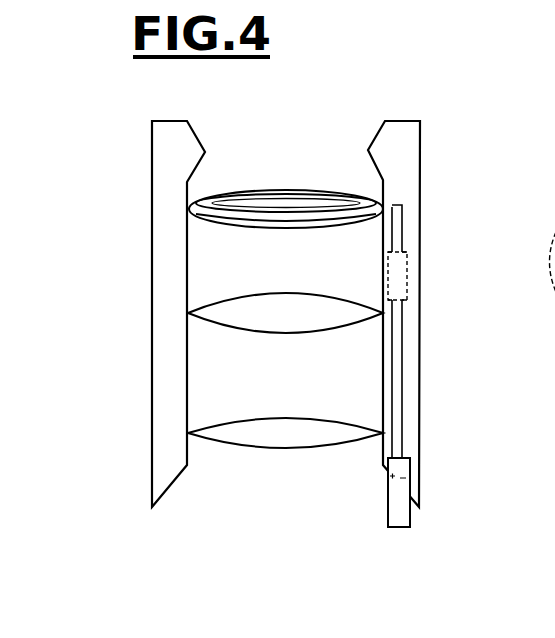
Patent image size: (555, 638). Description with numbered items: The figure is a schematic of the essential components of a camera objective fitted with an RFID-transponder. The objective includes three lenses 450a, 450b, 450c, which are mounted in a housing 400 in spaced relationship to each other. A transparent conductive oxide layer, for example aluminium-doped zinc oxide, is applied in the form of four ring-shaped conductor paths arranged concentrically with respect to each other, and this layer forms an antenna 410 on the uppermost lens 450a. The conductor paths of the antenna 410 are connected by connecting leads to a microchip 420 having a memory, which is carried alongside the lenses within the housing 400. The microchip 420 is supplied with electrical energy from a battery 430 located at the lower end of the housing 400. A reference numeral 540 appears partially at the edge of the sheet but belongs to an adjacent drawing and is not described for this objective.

The housing 400 is at (190, 495).
The antenna 410 is at (372, 187).
The microchip 420 is at (418, 273).
The battery 430 is at (398, 540).
The first lens 450a is at (190, 208).
The second lens 450b is at (190, 313).
The third lens 450c is at (190, 431).
The adjacent figure reference 540 is at (531, 631).